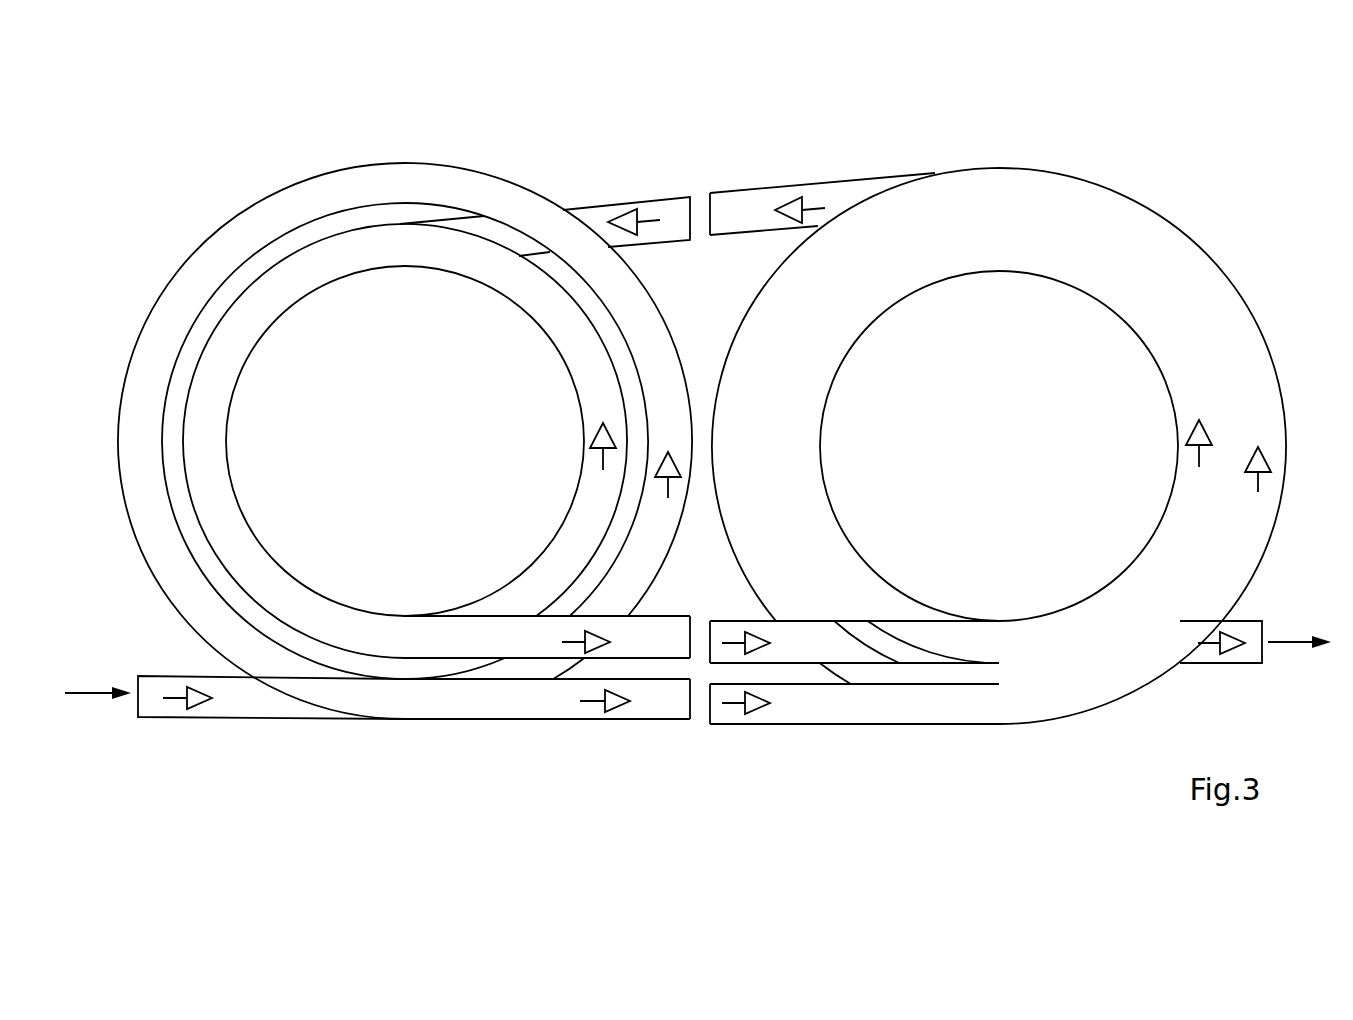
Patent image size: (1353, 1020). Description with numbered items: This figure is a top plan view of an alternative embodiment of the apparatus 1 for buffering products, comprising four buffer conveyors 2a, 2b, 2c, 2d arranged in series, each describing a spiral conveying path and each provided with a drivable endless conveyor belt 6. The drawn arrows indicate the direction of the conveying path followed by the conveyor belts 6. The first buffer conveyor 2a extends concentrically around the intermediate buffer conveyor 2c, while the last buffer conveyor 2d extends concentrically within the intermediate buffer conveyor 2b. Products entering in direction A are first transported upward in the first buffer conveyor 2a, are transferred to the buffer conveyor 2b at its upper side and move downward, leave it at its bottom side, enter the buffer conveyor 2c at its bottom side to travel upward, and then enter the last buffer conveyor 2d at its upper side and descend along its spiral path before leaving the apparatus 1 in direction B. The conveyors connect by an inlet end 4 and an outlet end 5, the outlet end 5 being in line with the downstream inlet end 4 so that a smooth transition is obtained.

The apparatus 1 is at (679, 152).
The first buffer conveyor 2a is at (347, 188).
The intermediate buffer conveyor 2b is at (1050, 190).
The intermediate buffer conveyor 2c is at (410, 250).
The last buffer conveyor 2d is at (993, 250).
The inlet end 4 is at (645, 213).
The outlet end 5 is at (741, 210).
The conveyor belt 6 is at (333, 690).